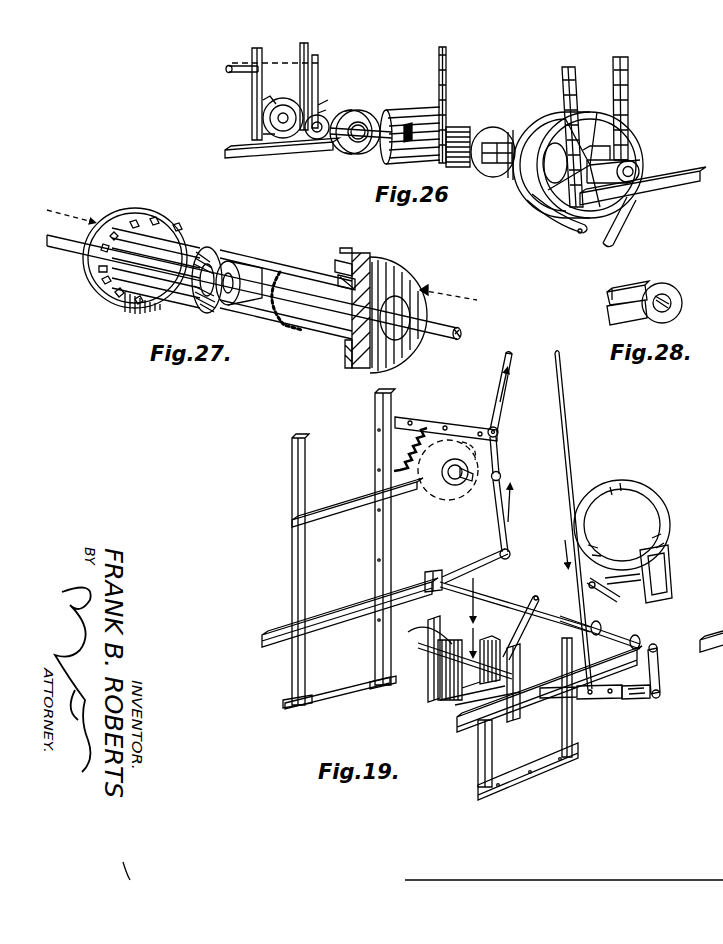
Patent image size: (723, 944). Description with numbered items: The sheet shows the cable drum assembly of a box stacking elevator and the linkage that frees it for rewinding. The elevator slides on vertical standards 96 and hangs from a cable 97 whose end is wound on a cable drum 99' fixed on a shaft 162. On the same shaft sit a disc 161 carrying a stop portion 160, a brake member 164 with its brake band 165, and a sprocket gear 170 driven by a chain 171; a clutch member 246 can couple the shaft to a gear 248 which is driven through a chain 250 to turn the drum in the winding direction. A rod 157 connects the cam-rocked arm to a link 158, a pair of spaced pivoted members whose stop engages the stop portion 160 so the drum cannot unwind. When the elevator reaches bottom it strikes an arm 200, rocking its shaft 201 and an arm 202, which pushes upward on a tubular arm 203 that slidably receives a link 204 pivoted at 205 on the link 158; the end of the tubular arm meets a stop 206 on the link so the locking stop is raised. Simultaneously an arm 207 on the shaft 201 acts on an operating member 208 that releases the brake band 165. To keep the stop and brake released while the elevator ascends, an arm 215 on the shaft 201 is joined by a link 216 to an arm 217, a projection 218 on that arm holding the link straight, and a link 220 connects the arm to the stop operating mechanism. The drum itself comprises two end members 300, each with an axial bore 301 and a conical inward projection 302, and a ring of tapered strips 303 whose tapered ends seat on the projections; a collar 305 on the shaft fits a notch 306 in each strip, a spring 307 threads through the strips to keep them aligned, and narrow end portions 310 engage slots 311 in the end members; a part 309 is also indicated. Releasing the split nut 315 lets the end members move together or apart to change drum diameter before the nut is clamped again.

In FIG. 26, the chain 250 is at (256, 62).
In FIG. 26, the gear 248 is at (283, 98).
In FIG. 26, the clutch member 246 is at (319, 99).
In FIG. 26, the stop portion 160 is at (363, 110).
In FIG. 26, the shaft 162 is at (379, 122).
In FIG. 27, the shaft 162 is at (440, 327).
In FIG. 19, the shaft 162 is at (474, 484).
In FIG. 26, the disc 161 is at (358, 154).
In FIG. 19, the disc 161 is at (455, 490).
In FIG. 26, the cable 97 is at (447, 74).
In FIG. 26, the cable drum 99' is at (467, 132).
In FIG. 27, the cable drum 99' is at (361, 298).
In FIG. 26, the split nut 315 is at (530, 137).
In FIG. 28, the split nut 315 is at (667, 292).
In FIG. 26, the brake member 164 is at (628, 152).
In FIG. 26, the gear 170 is at (602, 152).
In FIG. 26, the chain 171 is at (629, 90).
In FIG. 26, the brake band 165 is at (617, 220).
In FIG. 19, the brake band 165 is at (609, 497).
In FIG. 27, the end members 300 is at (152, 214).
In FIG. 27, the slots 311 is at (160, 230).
In FIG. 27, the strips or cleats 303 is at (216, 252).
In FIG. 27, the notch 306 is at (255, 252).
In FIG. 27, the collar 305 is at (229, 306).
In FIG. 27, the narrow end portions 310 is at (343, 268).
In FIG. 27, the block 309 is at (352, 275).
In FIG. 27, the axial bore 301 is at (385, 292).
In FIG. 27, the spring 307 is at (291, 335).
In FIG. 27, the conical inwardly projecting portion 302 is at (347, 352).
In FIG. 19, the link 158 is at (450, 425).
In FIG. 19, the rod 157 is at (498, 390).
In FIG. 19, the pivot 205 is at (499, 430).
In FIG. 19, the link 204 is at (498, 455).
In FIG. 19, the stop 206 is at (500, 474).
In FIG. 19, the tubular arm 203 is at (508, 536).
In FIG. 19, the link 220 is at (567, 441).
In FIG. 19, the shaft 201 is at (494, 604).
In FIG. 19, the arm 202 is at (480, 565).
In FIG. 19, the arm 200 is at (520, 620).
In FIG. 19, the vertical standards 96 is at (513, 652).
In FIG. 19, the arm 217 is at (552, 714).
In FIG. 19, the arm 207 is at (600, 624).
In FIG. 19, the operating member 208 is at (604, 598).
In FIG. 19, the projection 218 is at (605, 691).
In FIG. 19, the link 216 is at (645, 699).
In FIG. 19, the arm 215 is at (659, 678).